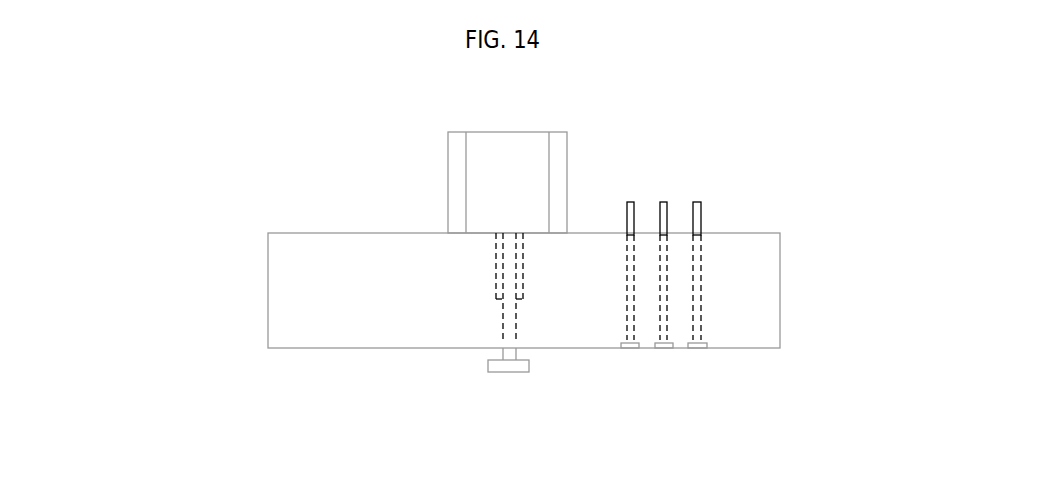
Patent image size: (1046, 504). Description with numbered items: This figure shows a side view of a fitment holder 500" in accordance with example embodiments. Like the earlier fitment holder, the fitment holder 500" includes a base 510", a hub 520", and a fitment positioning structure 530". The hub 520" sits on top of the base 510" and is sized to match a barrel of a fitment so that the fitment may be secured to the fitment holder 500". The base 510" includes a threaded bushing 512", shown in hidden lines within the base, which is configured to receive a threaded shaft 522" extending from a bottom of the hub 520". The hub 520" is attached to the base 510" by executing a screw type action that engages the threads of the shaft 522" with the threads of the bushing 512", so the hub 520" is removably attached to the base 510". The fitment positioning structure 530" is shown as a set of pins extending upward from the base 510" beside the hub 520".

The fitment holder 500 is at (172, 215).
The base 510 is at (757, 287).
The hub 520 is at (480, 173).
The threaded bushing 512 is at (495, 292).
The threaded shaft 522 is at (394, 412).
The fitment positioning structure 530 is at (678, 167).